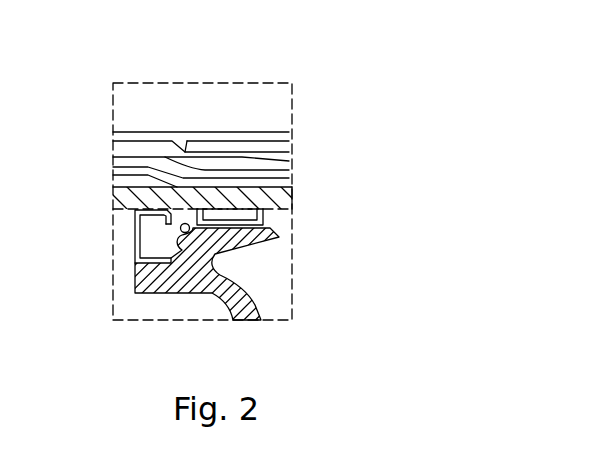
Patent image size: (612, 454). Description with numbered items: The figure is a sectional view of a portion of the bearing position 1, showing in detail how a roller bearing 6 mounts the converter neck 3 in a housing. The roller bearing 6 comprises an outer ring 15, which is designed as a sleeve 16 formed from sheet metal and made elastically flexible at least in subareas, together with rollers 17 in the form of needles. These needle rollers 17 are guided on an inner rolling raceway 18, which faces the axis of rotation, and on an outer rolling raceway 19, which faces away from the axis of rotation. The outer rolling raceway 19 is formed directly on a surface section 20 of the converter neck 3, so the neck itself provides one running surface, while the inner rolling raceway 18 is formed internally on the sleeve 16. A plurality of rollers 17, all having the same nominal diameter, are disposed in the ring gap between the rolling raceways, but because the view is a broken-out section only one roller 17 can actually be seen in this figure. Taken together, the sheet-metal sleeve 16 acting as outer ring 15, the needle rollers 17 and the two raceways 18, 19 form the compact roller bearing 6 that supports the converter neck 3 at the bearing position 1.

The bearing position 1 is at (166, 117).
The converter neck 3 is at (118, 197).
The roller bearing 6 is at (228, 217).
The outer ring 15 is at (239, 260).
The sleeve 16 is at (277, 237).
The rollers 17 is at (265, 212).
The inner rolling raceway 18 is at (203, 210).
The outer rolling raceway 19 is at (128, 209).
The surface section 20 is at (288, 190).